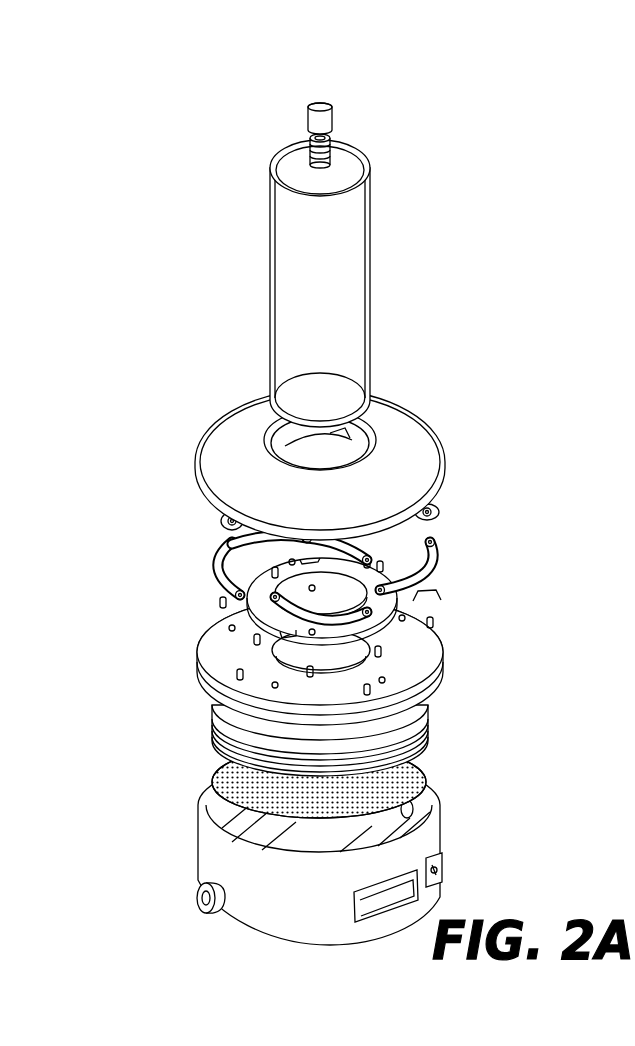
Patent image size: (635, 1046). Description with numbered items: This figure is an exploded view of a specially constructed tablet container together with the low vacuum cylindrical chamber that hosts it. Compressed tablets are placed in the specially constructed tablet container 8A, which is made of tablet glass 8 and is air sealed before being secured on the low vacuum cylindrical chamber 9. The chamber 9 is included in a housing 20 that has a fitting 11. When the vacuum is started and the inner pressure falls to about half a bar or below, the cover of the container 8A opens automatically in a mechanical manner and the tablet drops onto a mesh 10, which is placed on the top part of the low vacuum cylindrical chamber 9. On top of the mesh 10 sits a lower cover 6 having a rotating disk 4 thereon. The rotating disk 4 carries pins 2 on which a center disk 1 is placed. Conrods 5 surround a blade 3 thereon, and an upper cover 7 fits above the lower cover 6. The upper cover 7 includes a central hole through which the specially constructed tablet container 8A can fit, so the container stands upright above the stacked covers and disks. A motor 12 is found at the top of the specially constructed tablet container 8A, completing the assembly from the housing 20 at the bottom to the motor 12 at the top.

The center disk 1 is at (272, 612).
The pins 2 is at (255, 643).
The blade 3 is at (258, 532).
The rotating disk 4 is at (225, 668).
The conrods 5 is at (215, 570).
The lower cover 6 is at (436, 673).
The upper cover 7 is at (218, 450).
The tablet glass 8 is at (347, 163).
The specially constructed tablet container 8A is at (282, 268).
The low vacuum cylindrical chamber 9 is at (228, 795).
The mesh 10 is at (427, 758).
The fitting 11 is at (200, 892).
The motor 12 is at (338, 110).
The housing 20 is at (442, 840).